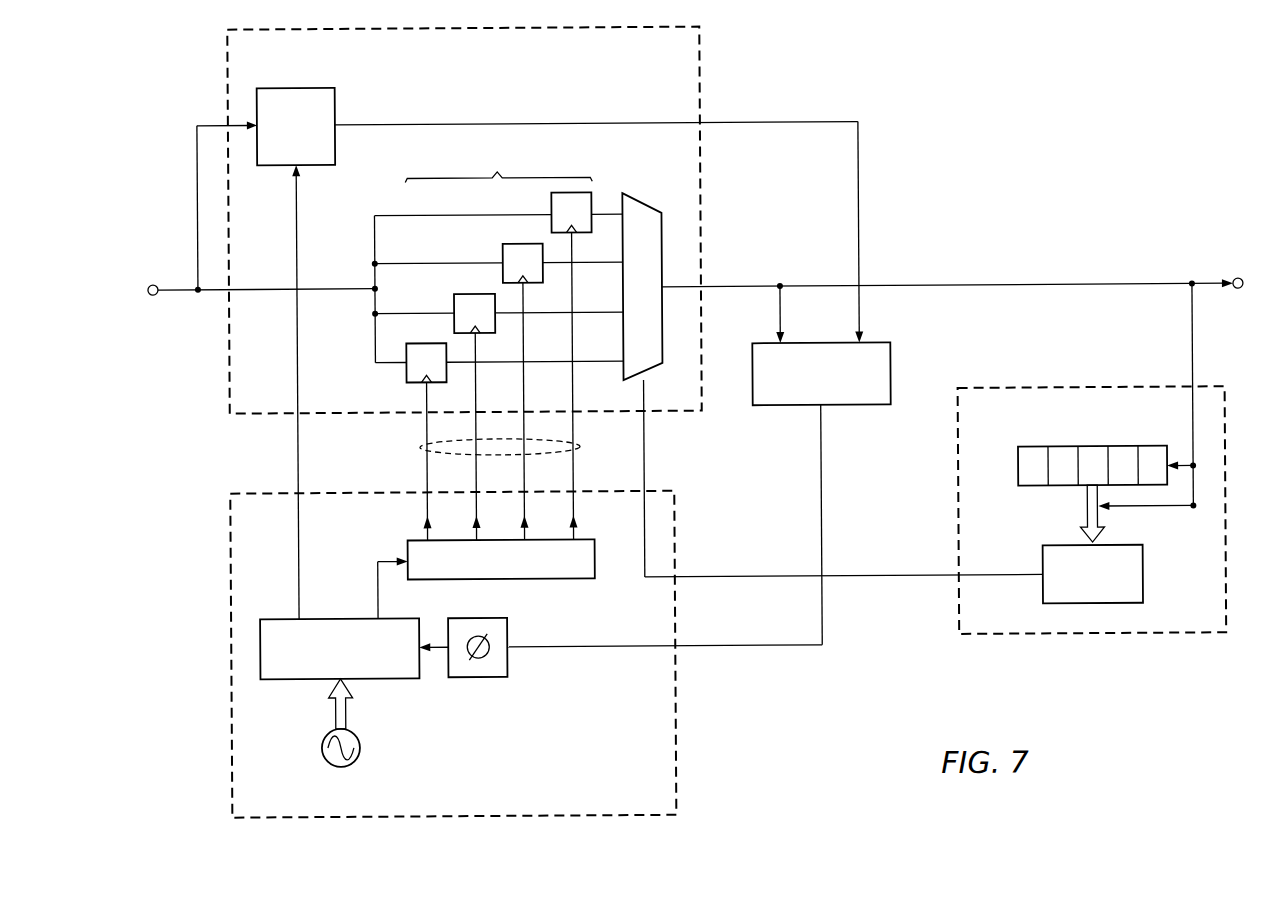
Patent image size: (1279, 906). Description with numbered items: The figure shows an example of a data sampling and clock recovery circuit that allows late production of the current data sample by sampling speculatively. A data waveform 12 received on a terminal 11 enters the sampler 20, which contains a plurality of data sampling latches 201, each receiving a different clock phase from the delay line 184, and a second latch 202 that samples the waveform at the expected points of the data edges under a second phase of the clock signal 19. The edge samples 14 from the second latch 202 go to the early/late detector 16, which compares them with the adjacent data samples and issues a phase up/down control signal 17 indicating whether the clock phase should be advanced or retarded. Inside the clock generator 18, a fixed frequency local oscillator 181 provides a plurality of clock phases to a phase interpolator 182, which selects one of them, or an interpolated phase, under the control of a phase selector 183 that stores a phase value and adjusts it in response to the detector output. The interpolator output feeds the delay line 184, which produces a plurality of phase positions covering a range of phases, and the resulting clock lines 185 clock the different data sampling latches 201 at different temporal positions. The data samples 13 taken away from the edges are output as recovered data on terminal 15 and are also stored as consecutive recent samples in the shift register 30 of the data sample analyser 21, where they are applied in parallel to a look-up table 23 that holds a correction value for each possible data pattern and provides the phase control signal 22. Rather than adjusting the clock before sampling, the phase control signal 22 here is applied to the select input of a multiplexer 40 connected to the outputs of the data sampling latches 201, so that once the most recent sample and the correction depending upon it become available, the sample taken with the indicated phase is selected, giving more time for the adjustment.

The terminal 11 is at (154, 293).
The data waveform 12 is at (177, 286).
The data samples 13 is at (765, 287).
The edge samples 14 is at (758, 123).
The terminal 15 is at (1240, 282).
The early/late detector 16 is at (891, 380).
The control signal 17 is at (742, 647).
The clock generator 18 is at (224, 719).
The clock signal 19 is at (474, 455).
The sampler 20 is at (224, 69).
The data sample analyser 21 is at (1099, 644).
The phase control signal 22 is at (885, 578).
The look-up table 23 is at (1142, 585).
The shift register 30 is at (1090, 449).
The multiplexer 40 is at (640, 193).
The local oscillator 181 is at (358, 752).
The phase interpolator 182 is at (295, 678).
The phase selector 183 is at (478, 677).
The delay line 184 is at (545, 579).
The multiplexer 185 is at (405, 518).
The data sampling latch 201 is at (497, 264).
The second latch 202 is at (290, 86).